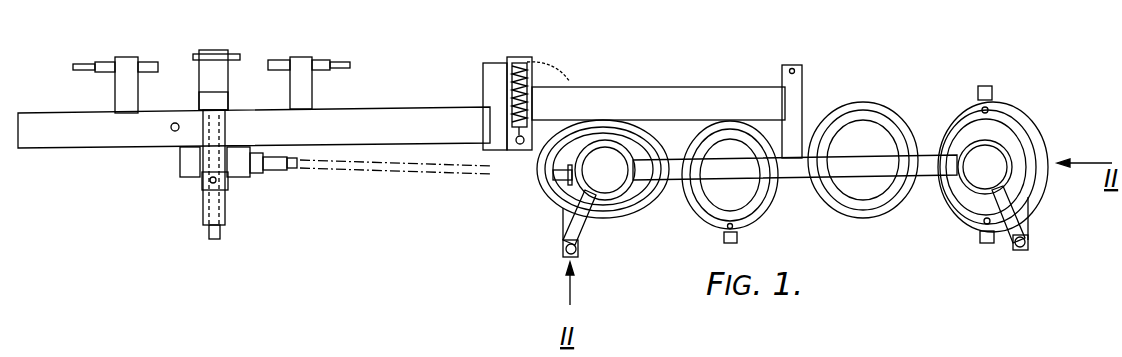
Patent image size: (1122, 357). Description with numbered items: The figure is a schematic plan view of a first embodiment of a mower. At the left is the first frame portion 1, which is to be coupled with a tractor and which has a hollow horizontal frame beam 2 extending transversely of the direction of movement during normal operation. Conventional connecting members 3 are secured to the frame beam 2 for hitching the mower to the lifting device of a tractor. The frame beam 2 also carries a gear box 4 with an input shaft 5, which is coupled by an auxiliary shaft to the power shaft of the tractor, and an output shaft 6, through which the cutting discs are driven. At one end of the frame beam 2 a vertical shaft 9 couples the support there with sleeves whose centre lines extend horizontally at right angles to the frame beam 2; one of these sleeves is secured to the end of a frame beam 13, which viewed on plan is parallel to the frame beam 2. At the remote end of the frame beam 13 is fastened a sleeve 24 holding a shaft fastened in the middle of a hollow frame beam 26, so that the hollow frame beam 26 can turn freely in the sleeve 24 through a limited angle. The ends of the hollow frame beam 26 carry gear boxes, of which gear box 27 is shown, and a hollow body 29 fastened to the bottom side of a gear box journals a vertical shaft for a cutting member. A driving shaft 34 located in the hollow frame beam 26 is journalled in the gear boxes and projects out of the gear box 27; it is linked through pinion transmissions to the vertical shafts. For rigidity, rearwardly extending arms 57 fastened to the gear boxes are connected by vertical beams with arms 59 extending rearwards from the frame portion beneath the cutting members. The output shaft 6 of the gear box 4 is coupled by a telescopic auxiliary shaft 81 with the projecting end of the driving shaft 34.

The first frame portion 1 is at (52, 153).
The frame beam 2 is at (45, 118).
The connecting members 3 is at (96, 62).
The gear box 4 is at (185, 172).
The input shaft 5 is at (218, 132).
The output shaft 6 is at (290, 170).
The vertical shaft 9 is at (520, 145).
The frame beam 13 is at (667, 95).
The sleeve 24 is at (802, 95).
The hollow frame beam 26 is at (765, 195).
The gear box 27 is at (614, 182).
The hollow body 29 is at (1000, 155).
The driving shaft 34 is at (560, 178).
The arms 57 is at (567, 240).
The arms 59 is at (563, 225).
The telescopic auxiliary shaft 81 is at (427, 168).